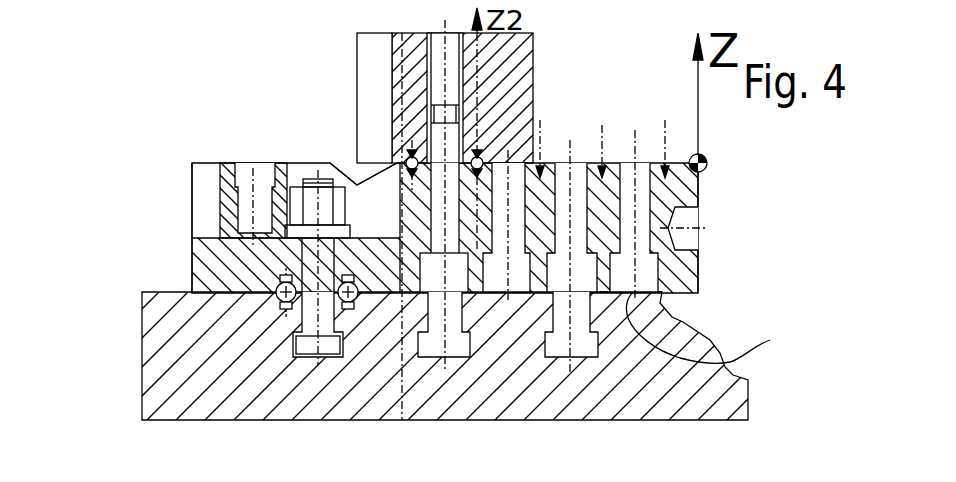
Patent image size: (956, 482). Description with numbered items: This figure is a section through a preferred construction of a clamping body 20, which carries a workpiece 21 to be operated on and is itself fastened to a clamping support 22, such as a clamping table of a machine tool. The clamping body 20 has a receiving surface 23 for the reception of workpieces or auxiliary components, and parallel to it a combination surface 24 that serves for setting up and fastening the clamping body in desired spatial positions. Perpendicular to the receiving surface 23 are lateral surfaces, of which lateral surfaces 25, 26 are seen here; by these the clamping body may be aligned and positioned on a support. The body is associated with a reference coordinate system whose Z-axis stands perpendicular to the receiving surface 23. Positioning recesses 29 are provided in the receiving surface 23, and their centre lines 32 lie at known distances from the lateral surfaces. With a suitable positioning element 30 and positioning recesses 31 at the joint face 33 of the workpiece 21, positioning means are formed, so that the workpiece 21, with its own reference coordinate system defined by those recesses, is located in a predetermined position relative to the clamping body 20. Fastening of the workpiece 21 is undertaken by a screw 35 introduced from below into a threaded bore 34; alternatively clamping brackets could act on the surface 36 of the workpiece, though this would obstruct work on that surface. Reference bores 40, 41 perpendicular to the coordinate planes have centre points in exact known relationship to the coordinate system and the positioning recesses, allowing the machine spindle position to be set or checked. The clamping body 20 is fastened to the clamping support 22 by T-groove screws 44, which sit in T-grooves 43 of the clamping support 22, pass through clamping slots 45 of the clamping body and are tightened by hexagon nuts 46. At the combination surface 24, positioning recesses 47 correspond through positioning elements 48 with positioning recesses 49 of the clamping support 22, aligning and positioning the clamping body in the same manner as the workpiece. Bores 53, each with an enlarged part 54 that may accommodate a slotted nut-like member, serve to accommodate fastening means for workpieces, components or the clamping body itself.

The clamping body 20 is at (688, 182).
The workpiece 21 is at (523, 50).
The clamping support 22 is at (708, 393).
The receiving surface 23 is at (293, 173).
The combination surface 24 is at (687, 290).
The lateral surface 25 is at (192, 163).
The lateral surface 26 is at (703, 283).
The positioning recesses 29 is at (540, 145).
The positioning element 30 is at (480, 170).
The positioning recesses 31 is at (463, 113).
The centre lines 32 is at (540, 173).
The joint face 33 is at (350, 167).
The threaded bore 34 is at (410, 156).
The screw 35 is at (458, 277).
The surface 36 is at (387, 33).
The reference bore 40 is at (687, 218).
The reference bore 41 is at (247, 173).
The T-grooves 43 is at (335, 357).
The T-groove screws 44 is at (308, 340).
The clamping slots 45 is at (290, 247).
The hexagon nuts 46 is at (310, 200).
The positioning recesses 47 is at (278, 292).
The positioning elements 48 is at (278, 296).
The positioning recesses 49 is at (278, 308).
The bores 53 is at (640, 212).
The enlarged part 54 is at (730, 362).